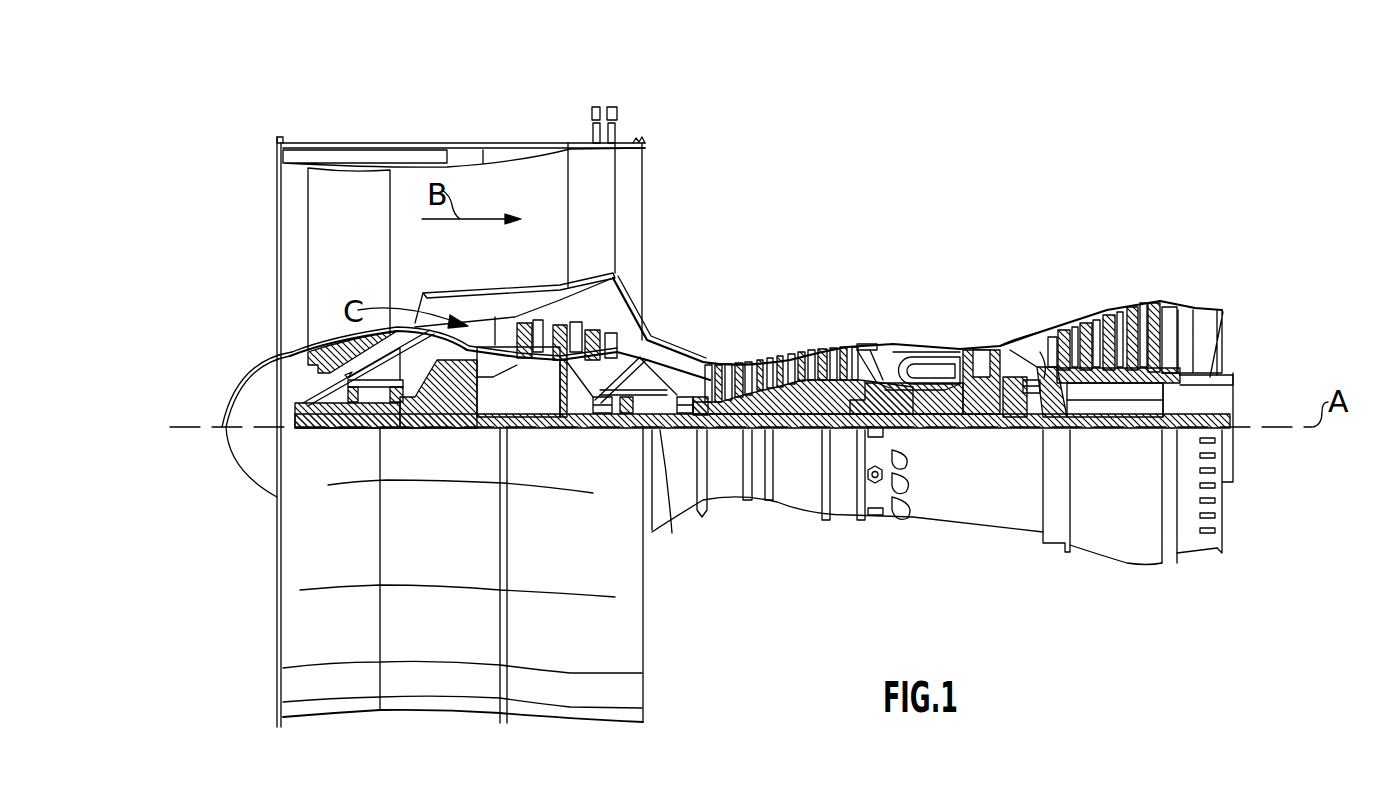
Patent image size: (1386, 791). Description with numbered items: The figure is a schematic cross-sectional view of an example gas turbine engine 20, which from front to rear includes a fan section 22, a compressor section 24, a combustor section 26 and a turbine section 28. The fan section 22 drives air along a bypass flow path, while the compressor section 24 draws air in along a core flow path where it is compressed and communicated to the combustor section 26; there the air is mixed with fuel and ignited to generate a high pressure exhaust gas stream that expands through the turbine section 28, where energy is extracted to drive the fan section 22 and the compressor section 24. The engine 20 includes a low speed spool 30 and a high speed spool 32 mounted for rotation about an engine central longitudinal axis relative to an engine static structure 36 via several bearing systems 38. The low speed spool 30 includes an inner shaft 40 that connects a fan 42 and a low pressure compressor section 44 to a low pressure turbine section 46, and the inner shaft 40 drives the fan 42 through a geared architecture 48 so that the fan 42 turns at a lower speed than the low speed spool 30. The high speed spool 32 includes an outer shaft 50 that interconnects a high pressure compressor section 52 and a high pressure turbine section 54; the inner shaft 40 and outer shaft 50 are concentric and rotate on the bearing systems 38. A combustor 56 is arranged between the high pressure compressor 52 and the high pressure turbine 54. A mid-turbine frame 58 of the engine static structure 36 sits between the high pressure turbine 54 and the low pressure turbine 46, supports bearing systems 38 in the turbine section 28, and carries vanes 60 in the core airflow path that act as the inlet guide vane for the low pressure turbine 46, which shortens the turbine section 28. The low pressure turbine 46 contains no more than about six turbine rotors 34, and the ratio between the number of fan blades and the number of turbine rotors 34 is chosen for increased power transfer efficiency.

The gas turbine engine 20 is at (926, 192).
The fan section 22 is at (487, 122).
The compressor section 24 is at (905, 263).
The combustor section 26 is at (1003, 263).
The turbine section 28 is at (1180, 263).
The low speed spool 30 is at (800, 447).
The high speed spool 32 is at (840, 405).
The turbine rotors 34 is at (1135, 387).
The engine static structure 36 is at (840, 531).
The bearing systems 38 is at (357, 427).
The inner shaft 40 is at (660, 430).
The fan 42 is at (363, 273).
The low pressure compressor section 44 is at (577, 333).
The low pressure turbine section 46 is at (1107, 325).
The geared architecture 48 is at (467, 412).
The outer shaft 50 is at (928, 430).
The high pressure compressor section 52 is at (777, 397).
The high pressure turbine section 54 is at (985, 350).
The combustor 56 is at (915, 372).
The mid-turbine frame 58 is at (1026, 355).
The vanes 60 is at (1060, 402).